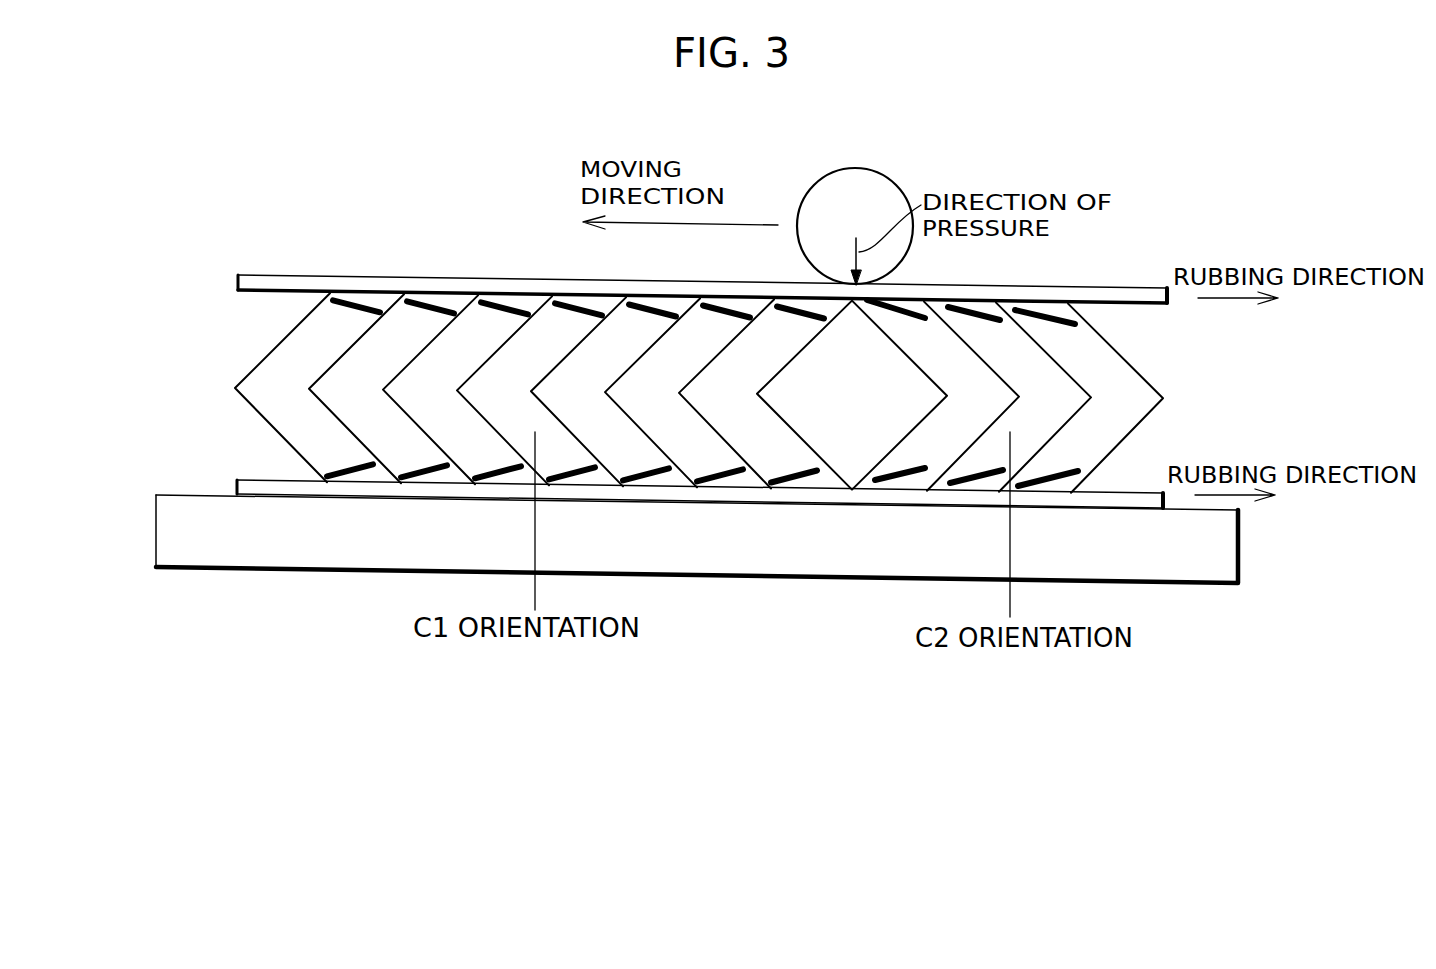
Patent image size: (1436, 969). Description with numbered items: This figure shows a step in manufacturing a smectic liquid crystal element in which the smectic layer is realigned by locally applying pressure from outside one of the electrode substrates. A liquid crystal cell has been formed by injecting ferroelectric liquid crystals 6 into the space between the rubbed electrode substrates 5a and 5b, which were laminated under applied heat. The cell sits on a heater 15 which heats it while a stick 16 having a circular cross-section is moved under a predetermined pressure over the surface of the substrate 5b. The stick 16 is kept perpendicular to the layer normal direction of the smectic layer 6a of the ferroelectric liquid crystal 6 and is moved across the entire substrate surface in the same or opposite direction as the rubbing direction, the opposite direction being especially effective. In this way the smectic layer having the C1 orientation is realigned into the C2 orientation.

The stick 16 is at (856, 171).
The electrode substrate 5b is at (238, 283).
The electrode substrate 5a is at (237, 487).
The ferroelectric liquid crystals 6 is at (1200, 396).
The smectic layer 6a is at (283, 352).
The heater 15 is at (1195, 573).